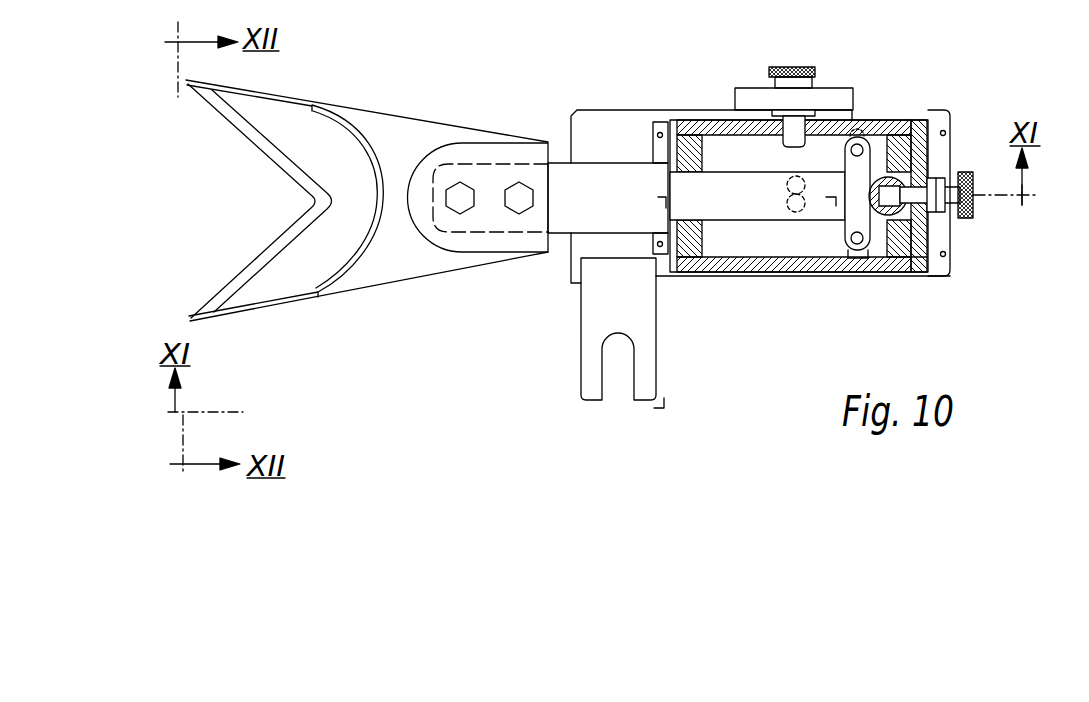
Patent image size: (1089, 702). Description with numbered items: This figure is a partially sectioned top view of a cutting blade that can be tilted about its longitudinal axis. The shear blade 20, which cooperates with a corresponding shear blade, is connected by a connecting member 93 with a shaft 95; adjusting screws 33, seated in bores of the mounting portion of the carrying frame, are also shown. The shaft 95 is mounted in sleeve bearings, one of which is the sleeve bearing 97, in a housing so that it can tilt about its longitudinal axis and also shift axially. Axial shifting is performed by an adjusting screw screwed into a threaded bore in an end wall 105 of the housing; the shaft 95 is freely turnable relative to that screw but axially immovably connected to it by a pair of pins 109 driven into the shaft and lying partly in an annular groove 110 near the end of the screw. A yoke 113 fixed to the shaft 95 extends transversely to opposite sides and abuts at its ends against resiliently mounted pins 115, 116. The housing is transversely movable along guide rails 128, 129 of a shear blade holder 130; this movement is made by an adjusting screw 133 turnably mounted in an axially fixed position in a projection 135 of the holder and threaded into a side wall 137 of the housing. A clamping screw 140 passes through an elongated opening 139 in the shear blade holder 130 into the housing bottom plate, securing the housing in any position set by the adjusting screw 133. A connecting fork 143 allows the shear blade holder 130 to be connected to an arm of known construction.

The shear blade 20 is at (379, 100).
The adjusting screws 33 is at (517, 215).
The connecting member 93 is at (562, 242).
The shaft 95 is at (740, 272).
The sleeve bearing 97 is at (700, 220).
The end wall 105 is at (918, 275).
The pins 109 is at (927, 217).
The annular groove 110 is at (885, 170).
The yoke 113 is at (848, 256).
The resiliently mounted pin 115 is at (857, 262).
The resiliently mounted pin 116 is at (857, 140).
The guide rail 128 is at (948, 120).
The guide rail 129 is at (654, 153).
The shear blade holder 130 is at (591, 100).
The adjusting screw 133 is at (791, 66).
The projection 135 is at (737, 90).
The side wall 137 is at (712, 122).
The elongated opening 139 is at (795, 176).
The clamping screw 140 is at (796, 214).
The connecting fork 143 is at (590, 378).